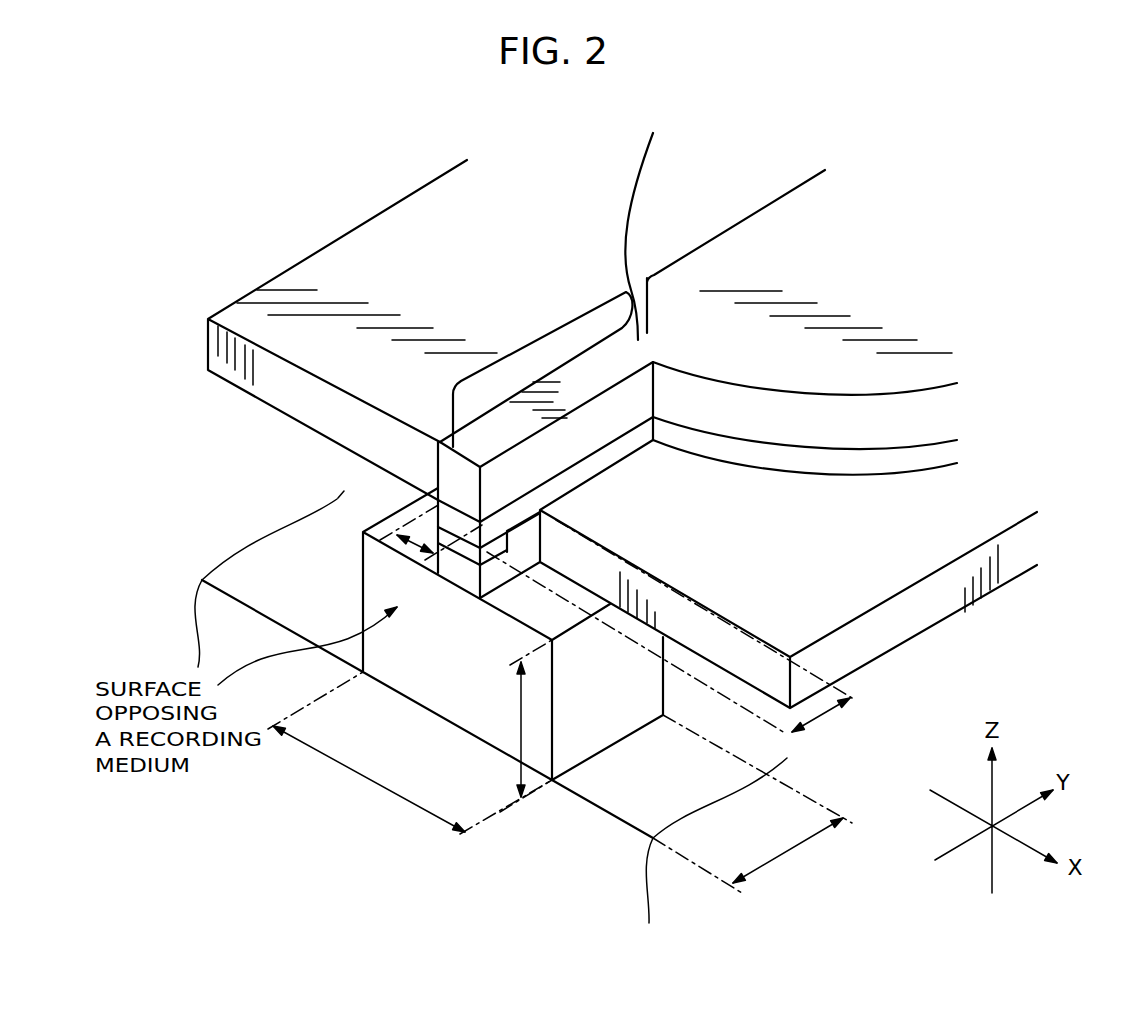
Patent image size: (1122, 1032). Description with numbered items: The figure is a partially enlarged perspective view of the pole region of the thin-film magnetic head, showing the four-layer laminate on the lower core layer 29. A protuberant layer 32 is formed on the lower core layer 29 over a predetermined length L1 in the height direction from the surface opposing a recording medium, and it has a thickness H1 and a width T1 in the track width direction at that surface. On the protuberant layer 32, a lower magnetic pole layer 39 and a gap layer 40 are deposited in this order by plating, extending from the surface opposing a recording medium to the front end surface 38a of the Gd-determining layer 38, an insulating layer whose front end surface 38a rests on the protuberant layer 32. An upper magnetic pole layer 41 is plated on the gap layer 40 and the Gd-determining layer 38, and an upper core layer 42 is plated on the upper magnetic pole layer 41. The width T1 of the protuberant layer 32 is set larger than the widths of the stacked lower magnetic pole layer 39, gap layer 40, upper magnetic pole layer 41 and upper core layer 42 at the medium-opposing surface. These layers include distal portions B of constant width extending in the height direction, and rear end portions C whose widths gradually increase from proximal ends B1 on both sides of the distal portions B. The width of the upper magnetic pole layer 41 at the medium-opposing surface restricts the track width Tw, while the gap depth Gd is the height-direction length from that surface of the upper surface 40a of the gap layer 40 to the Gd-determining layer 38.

The lower core layer 29 is at (555, 817).
The protuberant layer 32 is at (630, 690).
The Gd-determining layer 38 is at (900, 562).
The front end surface 38a is at (578, 553).
The lower magnetic pole layer 39 is at (470, 582).
The gap layer 40 is at (452, 560).
The upper surface 40a is at (507, 533).
The upper magnetic pole layer 41 is at (817, 463).
The upper core layer 42 is at (773, 418).
The distal portions B is at (541, 339).
The proximal ends B1 is at (620, 318).
The rear end portions C is at (737, 219).
The track width Tw is at (400, 551).
The thickness of protuberant layer H1 is at (520, 726).
The width of protuberant layer T1 is at (410, 753).
The length of protuberant layer L1 is at (752, 804).
The gap depth Gd is at (669, 649).